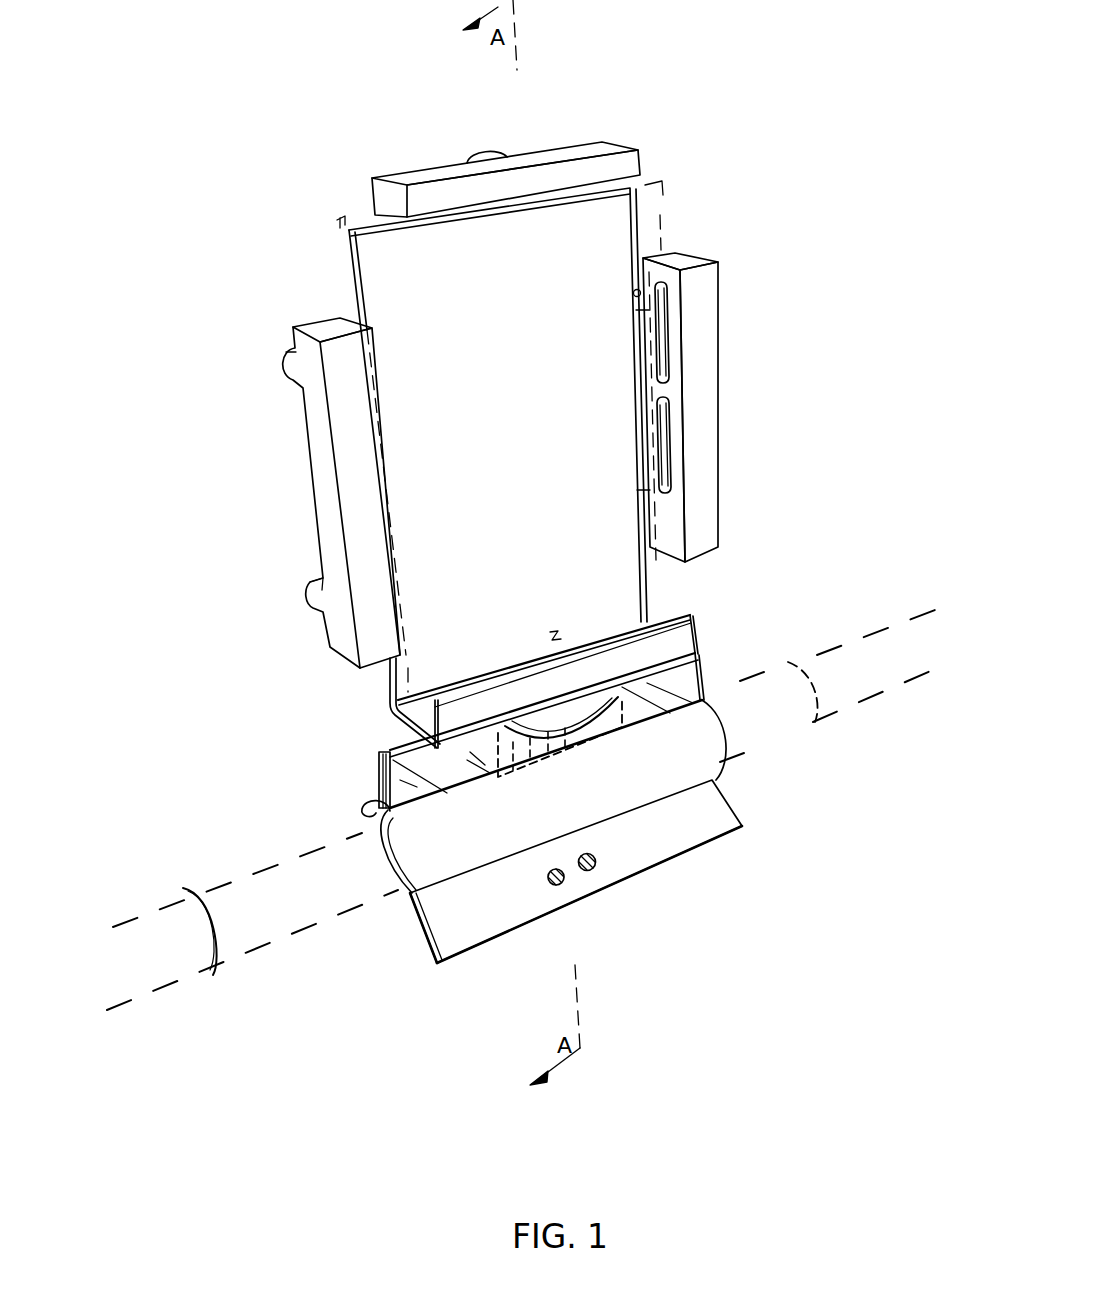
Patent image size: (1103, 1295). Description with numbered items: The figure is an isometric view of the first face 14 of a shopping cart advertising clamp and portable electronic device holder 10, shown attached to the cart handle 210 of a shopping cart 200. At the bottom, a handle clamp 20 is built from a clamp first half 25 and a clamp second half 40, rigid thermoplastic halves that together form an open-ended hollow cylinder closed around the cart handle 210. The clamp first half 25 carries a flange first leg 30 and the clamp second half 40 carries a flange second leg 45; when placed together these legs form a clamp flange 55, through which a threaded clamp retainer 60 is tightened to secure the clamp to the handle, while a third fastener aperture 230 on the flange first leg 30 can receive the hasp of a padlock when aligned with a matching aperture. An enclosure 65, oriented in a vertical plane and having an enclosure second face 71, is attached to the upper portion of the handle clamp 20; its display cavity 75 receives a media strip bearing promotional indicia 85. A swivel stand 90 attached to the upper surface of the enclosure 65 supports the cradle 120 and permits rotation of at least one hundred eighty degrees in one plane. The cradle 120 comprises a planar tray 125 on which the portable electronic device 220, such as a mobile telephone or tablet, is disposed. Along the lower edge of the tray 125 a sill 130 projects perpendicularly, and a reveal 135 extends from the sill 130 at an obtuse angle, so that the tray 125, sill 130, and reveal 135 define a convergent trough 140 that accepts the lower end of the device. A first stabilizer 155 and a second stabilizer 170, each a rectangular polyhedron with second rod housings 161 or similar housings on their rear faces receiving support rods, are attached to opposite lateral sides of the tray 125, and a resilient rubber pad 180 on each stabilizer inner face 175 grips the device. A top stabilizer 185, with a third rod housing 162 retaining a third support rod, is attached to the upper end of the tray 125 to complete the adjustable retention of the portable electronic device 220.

The portable electronic device holder 10 is at (263, 222).
The first face 14 is at (621, 413).
The handle clamp 20 is at (728, 862).
The clamp first half 25 is at (577, 837).
The flange first leg 30 is at (613, 907).
The clamp second half 40 is at (400, 905).
The flange second leg 45 is at (425, 957).
The clamp flange 55 is at (742, 826).
The clamp retainer 60 is at (597, 868).
The enclosure 65 is at (395, 855).
The enclosure second face 71 is at (380, 793).
The display cavity 75 is at (380, 782).
The indicia 85 is at (520, 726).
The swivel stand 90 is at (700, 692).
The cradle 120 is at (271, 339).
The tray 125 is at (420, 675).
The sill 130 is at (427, 720).
The reveal 135 is at (683, 630).
The trough 140 is at (562, 637).
The first stabilizer 155 is at (740, 397).
The second rod housing 161 is at (290, 363).
The third rod housing 162 is at (487, 158).
The second stabilizer 170 is at (305, 493).
The stabilizer inner face 175 is at (677, 465).
The pad 180 is at (659, 294).
The top stabilizer 185 is at (518, 144).
The shopping cart 200 is at (158, 957).
The cart handle 210 is at (792, 734).
The portable electronic device 220 is at (649, 208).
The third fastener aperture 230 is at (562, 882).